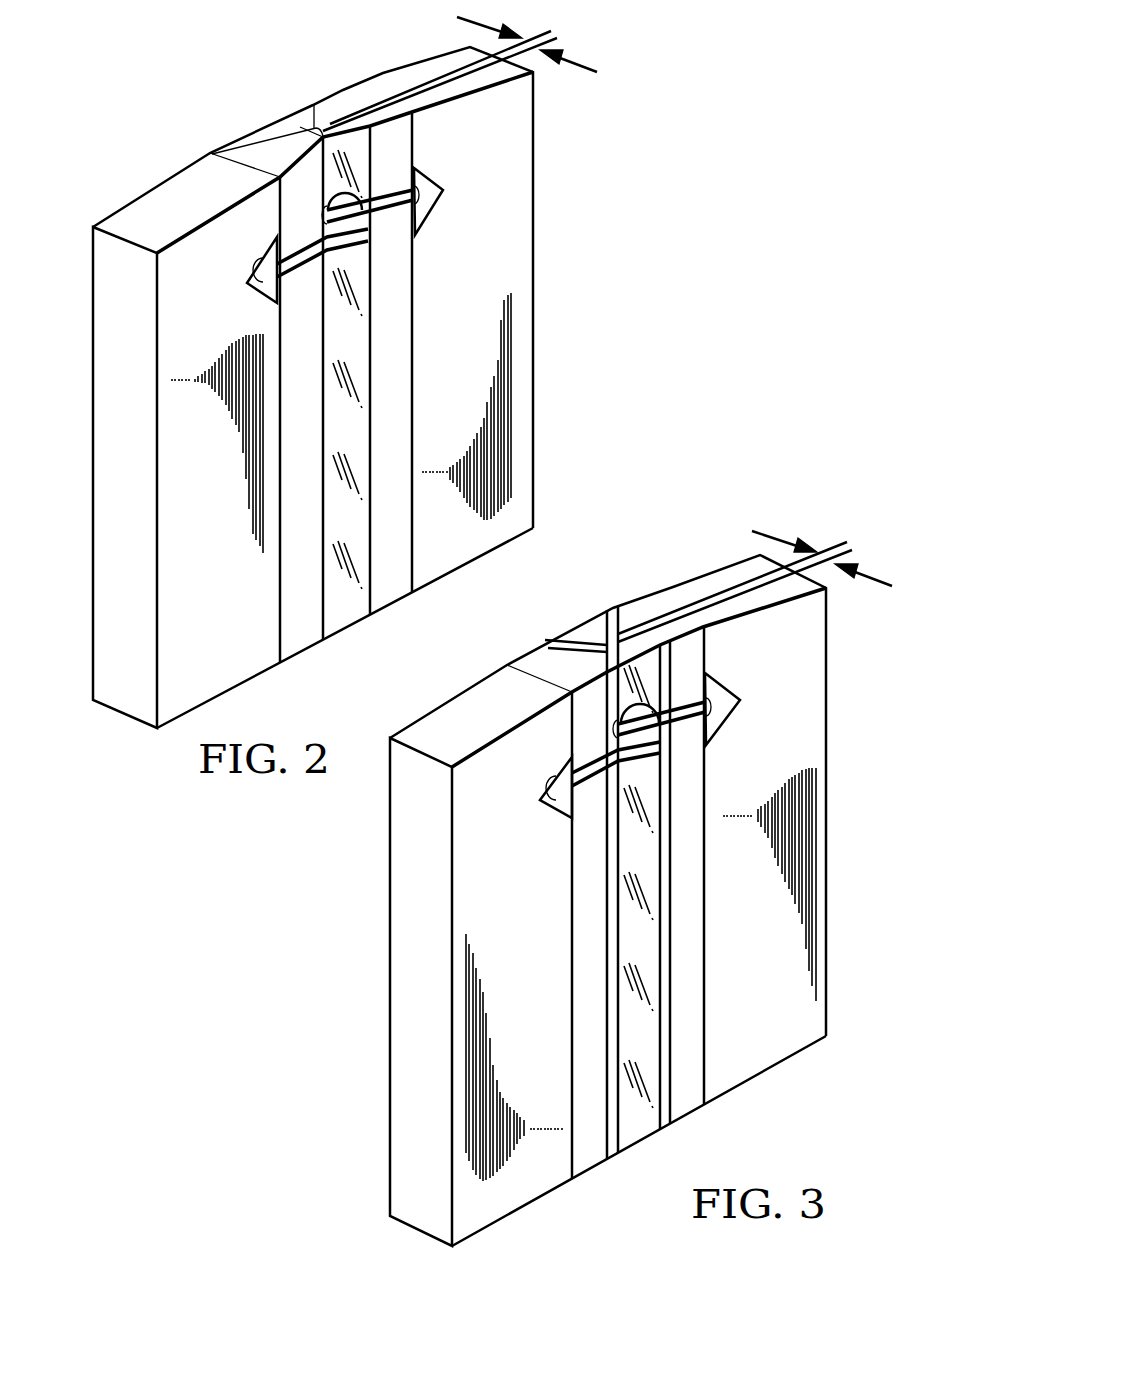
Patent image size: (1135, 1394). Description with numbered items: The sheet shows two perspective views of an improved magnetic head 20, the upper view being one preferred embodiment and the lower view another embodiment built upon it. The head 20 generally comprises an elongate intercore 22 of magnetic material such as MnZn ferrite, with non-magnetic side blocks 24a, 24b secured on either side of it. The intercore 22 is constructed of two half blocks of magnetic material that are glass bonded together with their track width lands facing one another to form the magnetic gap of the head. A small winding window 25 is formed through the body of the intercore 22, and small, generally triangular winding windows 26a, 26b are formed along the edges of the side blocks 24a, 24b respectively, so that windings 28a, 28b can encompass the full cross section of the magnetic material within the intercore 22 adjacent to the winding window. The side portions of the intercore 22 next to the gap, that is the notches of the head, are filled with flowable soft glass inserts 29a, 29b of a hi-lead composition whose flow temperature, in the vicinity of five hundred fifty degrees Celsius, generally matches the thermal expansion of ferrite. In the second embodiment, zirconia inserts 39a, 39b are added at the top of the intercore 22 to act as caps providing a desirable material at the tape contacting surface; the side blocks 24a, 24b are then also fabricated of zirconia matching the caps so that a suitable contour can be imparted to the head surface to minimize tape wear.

In FIG. 2, the head 20 is at (588, 102).
In FIG. 2, the intercore 22 is at (310, 367).
In FIG. 2, the side block 24a is at (176, 414).
In FIG. 2, the side block 24b is at (521, 370).
In FIG. 2, the winding window 25 is at (371, 180).
In FIG. 2, the winding window 26a is at (272, 305).
In FIG. 2, the winding window 26b is at (432, 205).
In FIG. 2, the winding 28a is at (302, 245).
In FIG. 2, the winding 28b is at (389, 214).
In FIG. 2, the glass insert 29a is at (294, 117).
In FIG. 2, the glass insert 29b is at (328, 140).
In FIG. 3, the zirconia insert 39a is at (578, 703).
In FIG. 3, the zirconia insert 39b is at (697, 645).